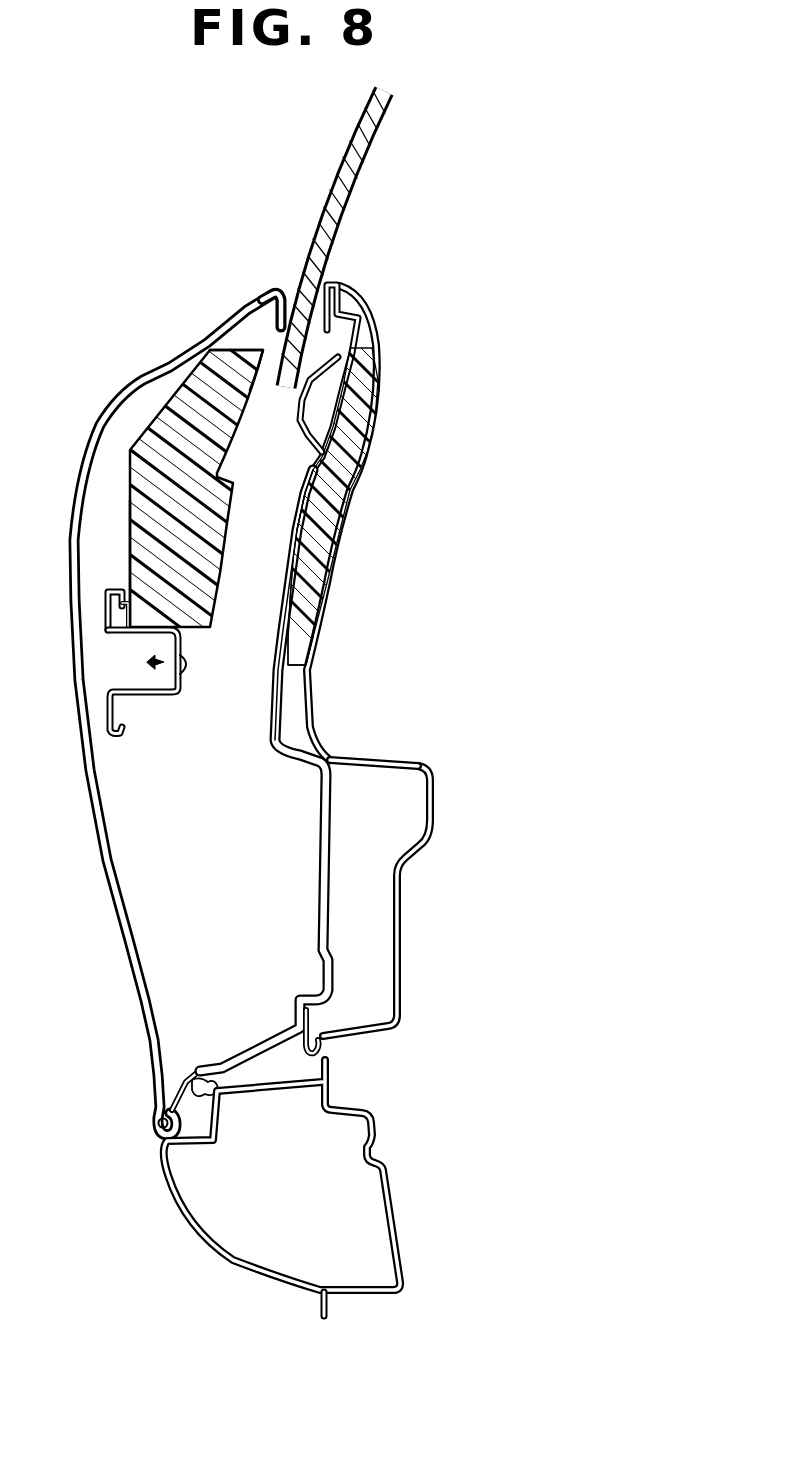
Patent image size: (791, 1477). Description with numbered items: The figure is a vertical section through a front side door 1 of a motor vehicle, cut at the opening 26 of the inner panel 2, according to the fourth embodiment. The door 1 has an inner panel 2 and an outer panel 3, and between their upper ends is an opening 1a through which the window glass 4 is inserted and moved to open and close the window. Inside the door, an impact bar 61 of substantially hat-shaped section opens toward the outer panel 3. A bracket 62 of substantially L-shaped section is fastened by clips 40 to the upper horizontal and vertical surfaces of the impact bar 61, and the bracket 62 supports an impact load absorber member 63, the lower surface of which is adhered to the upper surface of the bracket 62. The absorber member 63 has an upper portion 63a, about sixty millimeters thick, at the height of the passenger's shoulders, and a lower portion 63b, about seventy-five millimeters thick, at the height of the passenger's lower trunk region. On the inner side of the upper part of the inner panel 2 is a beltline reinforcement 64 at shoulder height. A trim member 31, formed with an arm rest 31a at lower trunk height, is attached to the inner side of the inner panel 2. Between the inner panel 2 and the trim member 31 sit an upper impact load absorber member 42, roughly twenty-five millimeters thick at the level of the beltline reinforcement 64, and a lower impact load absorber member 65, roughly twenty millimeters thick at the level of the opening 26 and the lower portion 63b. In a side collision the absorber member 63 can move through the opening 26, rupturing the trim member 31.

The front side door 1 is at (170, 683).
The opening 1a is at (287, 312).
The inner panel 2 is at (328, 490).
The outer panel 3 is at (108, 435).
The window glass 4 is at (345, 228).
The opening 26 is at (315, 513).
The trim member 31 is at (311, 1008).
The arm rest 31a is at (358, 755).
The clips 40 is at (188, 664).
The upper impact load absorber member 42 is at (353, 427).
The impact bar 61 is at (105, 622).
The bracket 62 is at (178, 632).
The impact load absorber member 63 is at (138, 481).
The upper portion 63a is at (237, 347).
The lower portion 63b is at (147, 558).
The beltline reinforcement 64 is at (303, 405).
The lower impact load absorber member 65 is at (313, 595).